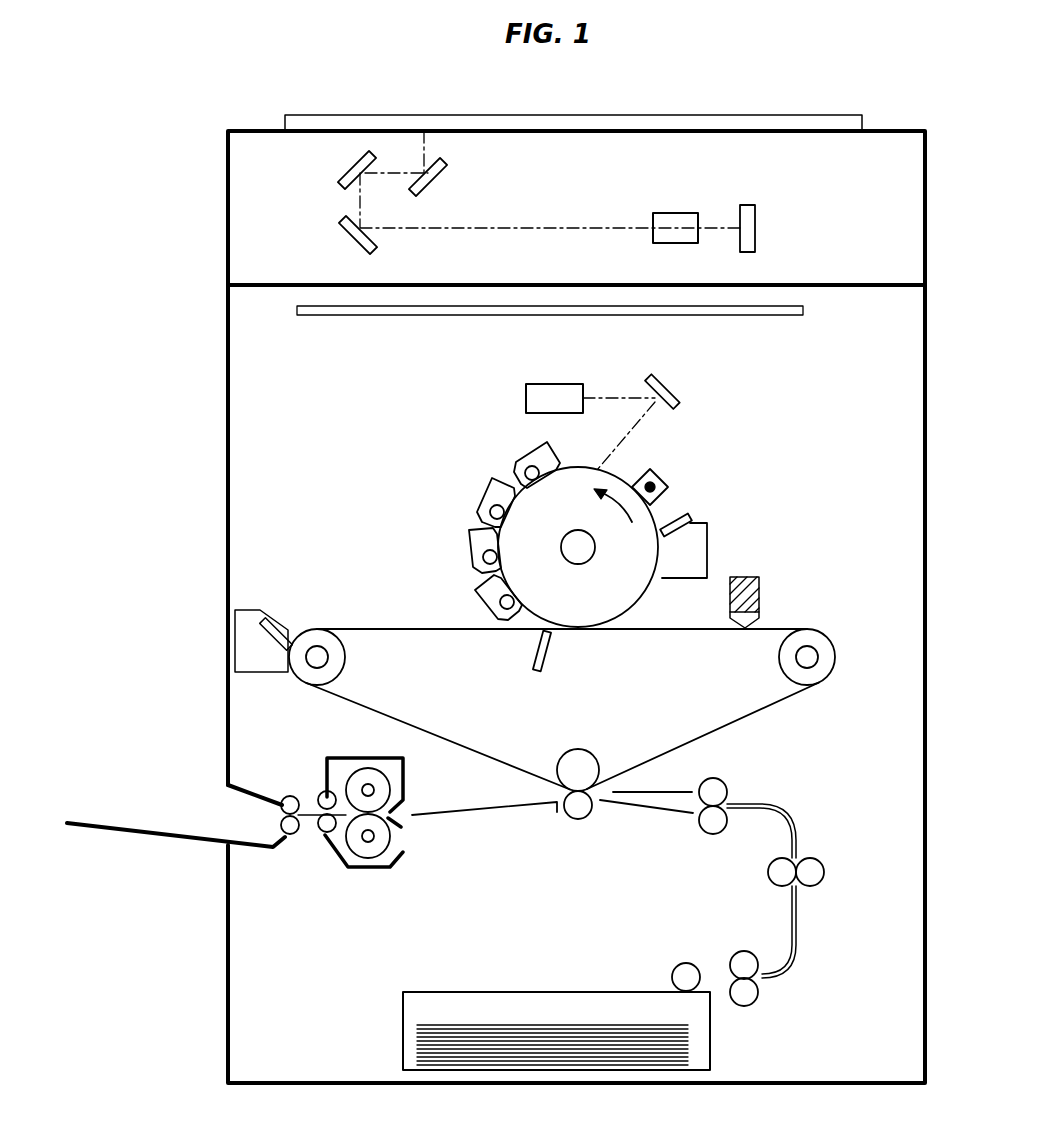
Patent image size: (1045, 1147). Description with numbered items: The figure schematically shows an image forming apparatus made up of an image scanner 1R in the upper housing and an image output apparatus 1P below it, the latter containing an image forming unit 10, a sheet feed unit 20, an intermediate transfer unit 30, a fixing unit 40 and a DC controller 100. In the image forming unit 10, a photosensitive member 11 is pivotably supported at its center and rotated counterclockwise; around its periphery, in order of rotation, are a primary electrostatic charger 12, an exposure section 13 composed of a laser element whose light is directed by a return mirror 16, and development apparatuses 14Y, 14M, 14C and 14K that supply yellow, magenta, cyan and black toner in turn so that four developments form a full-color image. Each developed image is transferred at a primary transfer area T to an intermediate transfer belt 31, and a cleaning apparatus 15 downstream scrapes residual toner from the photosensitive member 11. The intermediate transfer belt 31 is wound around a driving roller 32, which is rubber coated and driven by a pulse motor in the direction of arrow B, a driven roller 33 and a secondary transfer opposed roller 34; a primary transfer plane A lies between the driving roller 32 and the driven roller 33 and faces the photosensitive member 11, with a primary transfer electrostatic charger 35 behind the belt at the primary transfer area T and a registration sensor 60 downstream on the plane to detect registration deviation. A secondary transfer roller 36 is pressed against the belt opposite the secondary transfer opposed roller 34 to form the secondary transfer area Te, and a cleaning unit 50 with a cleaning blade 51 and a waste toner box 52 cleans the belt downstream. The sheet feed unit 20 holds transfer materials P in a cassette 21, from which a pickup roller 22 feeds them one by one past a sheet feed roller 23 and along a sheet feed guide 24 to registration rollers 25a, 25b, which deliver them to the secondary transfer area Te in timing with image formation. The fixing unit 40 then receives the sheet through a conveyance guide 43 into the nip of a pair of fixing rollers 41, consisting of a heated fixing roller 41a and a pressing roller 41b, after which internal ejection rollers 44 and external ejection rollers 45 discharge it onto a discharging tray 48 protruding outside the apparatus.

The image scanner 1R is at (228, 202).
The image output apparatus 1P is at (228, 332).
The DC controller 100 is at (360, 317).
The image forming unit 10 is at (447, 455).
The photosensitive member 11 is at (645, 600).
The primary electrostatic charger 12 is at (665, 478).
The exposure section 13 is at (562, 384).
The development apparatus 14K is at (535, 445).
The development apparatus 14C is at (488, 490).
The development apparatus 14M is at (470, 547).
The development apparatus 14Y is at (488, 595).
The cleaning apparatus 15 is at (705, 520).
The return mirror 16 is at (668, 380).
The registration sensor 60 is at (748, 575).
The intermediate transfer unit 30 is at (458, 738).
The intermediate transfer belt 31 is at (728, 720).
The driving roller 32 is at (822, 638).
The driven roller 33 is at (347, 660).
The secondary transfer opposed roller 34 is at (578, 749).
The primary transfer electrostatic charger 35 is at (550, 652).
The secondary transfer roller 36 is at (578, 820).
The primary transfer area T is at (535, 640).
The primary transfer plane A is at (633, 630).
The arrow B is at (395, 737).
The secondary transfer area Te is at (570, 793).
The cleaning unit 50 is at (252, 598).
The cleaning blade 51 is at (285, 614).
The waste toner box 52 is at (265, 673).
The fixing unit 40 is at (316, 915).
The pair of fixing rollers 41 is at (398, 870).
The fixing roller 41a is at (360, 770).
The pressing roller 41b is at (356, 865).
The conveyance guide 43 is at (463, 812).
The internal ejection rollers 44 is at (322, 835).
The external ejection rollers 45 is at (288, 795).
The discharging tray 48 is at (133, 823).
The sheet feed unit 20 is at (803, 795).
The cassette 21 is at (545, 992).
The pickup roller 22 is at (695, 963).
The sheet feed roller 23 is at (825, 872).
The sheet feed guide 24 is at (800, 822).
The registration roller 25a is at (718, 778).
The registration roller 25b is at (708, 836).
The transfer materials P is at (470, 1025).